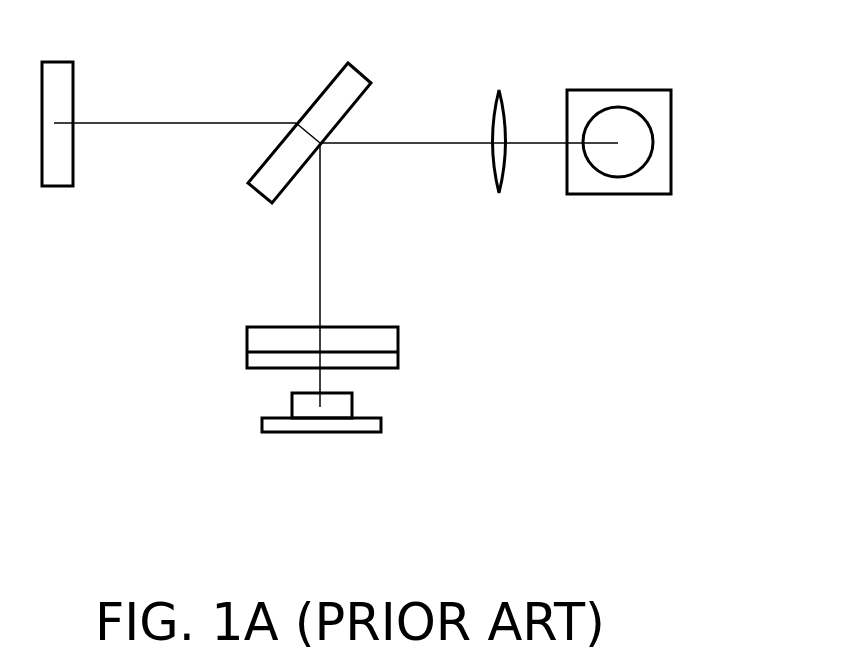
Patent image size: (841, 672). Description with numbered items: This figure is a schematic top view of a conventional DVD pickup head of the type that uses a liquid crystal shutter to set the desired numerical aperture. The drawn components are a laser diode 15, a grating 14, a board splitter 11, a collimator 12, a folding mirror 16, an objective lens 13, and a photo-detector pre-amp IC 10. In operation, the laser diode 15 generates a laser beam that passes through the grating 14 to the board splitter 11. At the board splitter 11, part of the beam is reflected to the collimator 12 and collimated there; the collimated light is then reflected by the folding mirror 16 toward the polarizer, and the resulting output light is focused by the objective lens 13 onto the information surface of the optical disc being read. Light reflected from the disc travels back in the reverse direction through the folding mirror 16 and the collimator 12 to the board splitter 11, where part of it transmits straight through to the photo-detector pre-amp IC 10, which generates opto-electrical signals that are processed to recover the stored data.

The photo-detector pre-amp IC 10 is at (55, 77).
The board splitter 11 is at (343, 87).
The collimator 12 is at (500, 112).
The objective lens 13 is at (652, 125).
The grating 14 is at (398, 342).
The laser diode 15 is at (352, 410).
The folding mirror 16 is at (672, 173).